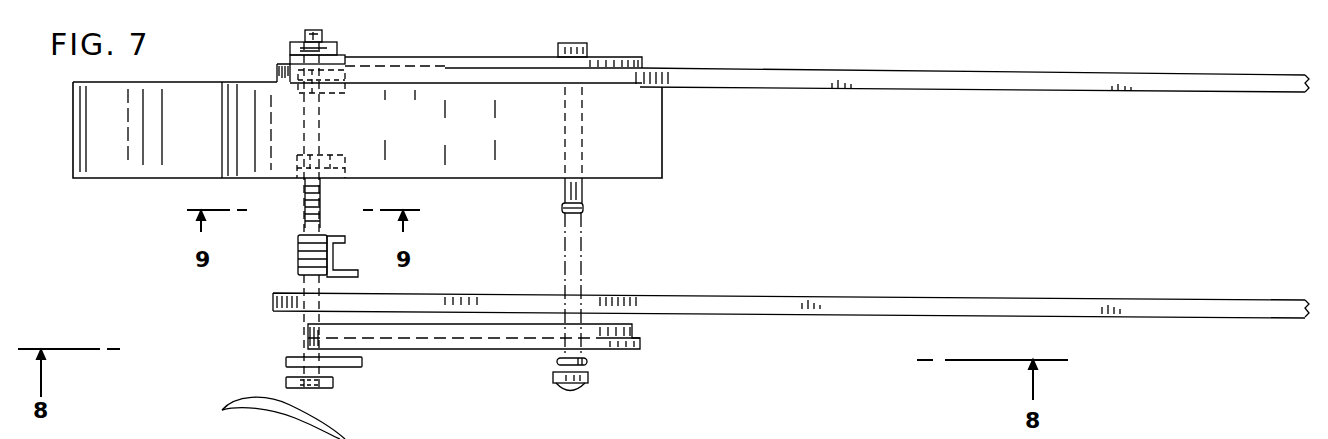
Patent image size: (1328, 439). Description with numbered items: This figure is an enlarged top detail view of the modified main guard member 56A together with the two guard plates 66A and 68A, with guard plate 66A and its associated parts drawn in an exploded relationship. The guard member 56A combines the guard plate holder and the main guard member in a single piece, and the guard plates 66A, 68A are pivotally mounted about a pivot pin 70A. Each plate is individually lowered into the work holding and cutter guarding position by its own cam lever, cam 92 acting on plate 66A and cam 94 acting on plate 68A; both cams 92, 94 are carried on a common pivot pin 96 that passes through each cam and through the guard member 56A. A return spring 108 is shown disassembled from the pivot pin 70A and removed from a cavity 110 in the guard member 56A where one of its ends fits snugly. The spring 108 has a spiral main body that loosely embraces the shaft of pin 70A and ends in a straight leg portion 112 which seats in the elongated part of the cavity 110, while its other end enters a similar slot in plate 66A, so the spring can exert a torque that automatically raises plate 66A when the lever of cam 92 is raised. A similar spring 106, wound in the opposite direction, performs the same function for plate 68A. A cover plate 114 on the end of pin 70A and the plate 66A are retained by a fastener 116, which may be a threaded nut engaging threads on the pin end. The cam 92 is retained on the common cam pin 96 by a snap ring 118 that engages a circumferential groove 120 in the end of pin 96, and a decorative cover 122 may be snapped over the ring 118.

The guard member 56A is at (110, 170).
The guard plate 66A is at (1016, 303).
The guard plate 68A is at (1018, 80).
The pivot pin 70A is at (308, 31).
The cam lever 92 is at (505, 330).
The cam lever 94 is at (495, 70).
The common pivot pin 96 is at (585, 47).
The spring 106 is at (325, 72).
The return spring 108 is at (298, 255).
The cavity 110 is at (333, 170).
The straight leg portion 112 is at (338, 232).
The cover plate 114 is at (362, 361).
The fastener 116 is at (333, 382).
The snap ring 118 is at (587, 360).
The circumferential groove 120 is at (583, 190).
The decorative cover 122 is at (588, 378).